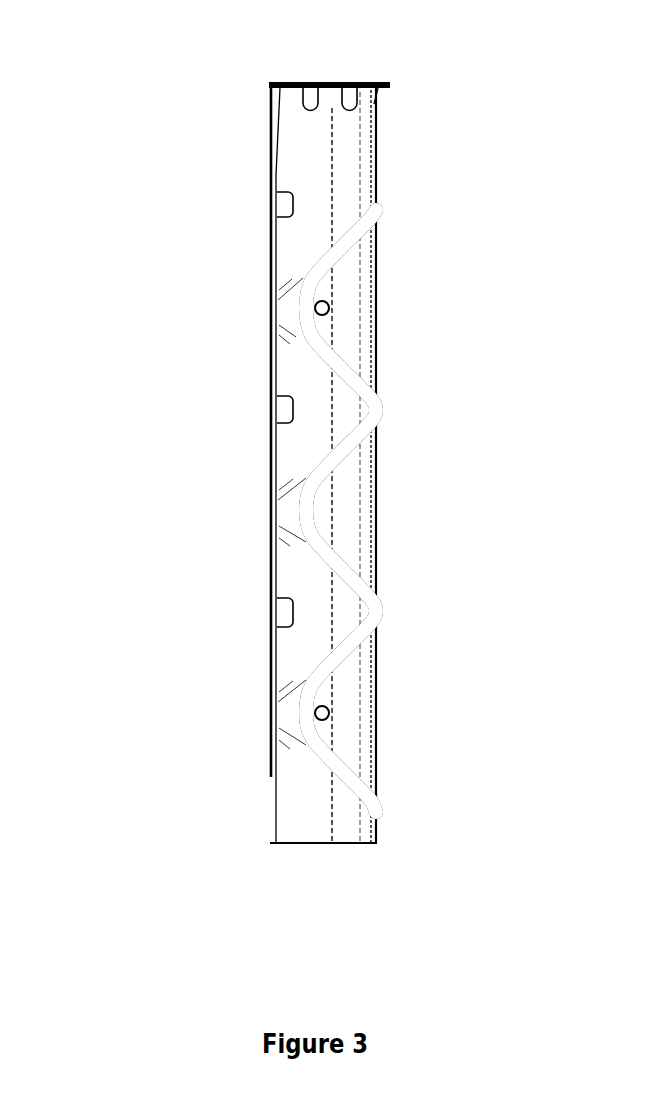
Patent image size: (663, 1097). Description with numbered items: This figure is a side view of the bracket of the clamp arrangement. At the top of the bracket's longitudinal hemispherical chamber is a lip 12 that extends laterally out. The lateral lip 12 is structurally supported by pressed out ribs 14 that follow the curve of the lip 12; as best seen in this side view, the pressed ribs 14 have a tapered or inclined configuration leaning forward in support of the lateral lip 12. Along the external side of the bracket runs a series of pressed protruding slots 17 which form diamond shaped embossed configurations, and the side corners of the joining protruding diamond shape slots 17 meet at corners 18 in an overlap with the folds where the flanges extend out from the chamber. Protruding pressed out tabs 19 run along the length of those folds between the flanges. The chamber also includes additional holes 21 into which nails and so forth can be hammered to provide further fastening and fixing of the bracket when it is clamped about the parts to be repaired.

The lip 12 is at (388, 80).
The pressed out ribs 14 is at (345, 103).
The pressed protruding slots 17 is at (348, 245).
The corners 18 is at (288, 312).
The protruding pressed out tabs 19 is at (287, 207).
The holes 21 is at (330, 312).